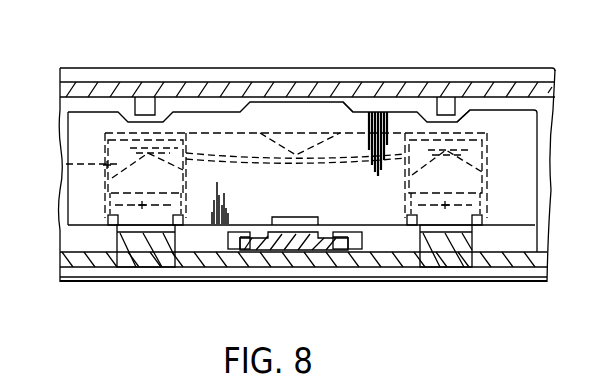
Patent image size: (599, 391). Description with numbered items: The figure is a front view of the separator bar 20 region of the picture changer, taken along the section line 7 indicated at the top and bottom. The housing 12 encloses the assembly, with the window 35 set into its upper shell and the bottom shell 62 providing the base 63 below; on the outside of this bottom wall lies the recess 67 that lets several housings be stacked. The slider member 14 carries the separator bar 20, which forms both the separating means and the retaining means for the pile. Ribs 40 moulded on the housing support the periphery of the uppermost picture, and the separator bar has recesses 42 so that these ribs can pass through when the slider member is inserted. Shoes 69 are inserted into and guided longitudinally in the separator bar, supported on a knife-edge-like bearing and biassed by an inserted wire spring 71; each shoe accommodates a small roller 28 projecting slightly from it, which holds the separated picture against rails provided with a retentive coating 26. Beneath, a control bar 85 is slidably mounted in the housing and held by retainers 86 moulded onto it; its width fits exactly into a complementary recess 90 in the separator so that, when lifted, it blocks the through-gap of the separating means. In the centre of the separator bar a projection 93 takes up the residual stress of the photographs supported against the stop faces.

The section line VII-VII 7 is at (190, 52).
The housing 12 is at (266, 282).
The slider member 14 is at (405, 108).
The separator bar 20 is at (88, 134).
The retentive coating 26 is at (133, 237).
The small roller 28 is at (138, 190).
The window 35 is at (298, 88).
The ribs 40 is at (447, 103).
The recesses 42 is at (468, 117).
The bottom shell 62 is at (513, 262).
The base 63 is at (370, 283).
The recess 67 is at (227, 268).
The shoe 69 is at (66, 164).
The wire spring 71 is at (338, 163).
The control bar 85 is at (282, 232).
The retainers 86 is at (240, 234).
The recess 90 is at (302, 220).
The projection 93 is at (335, 112).